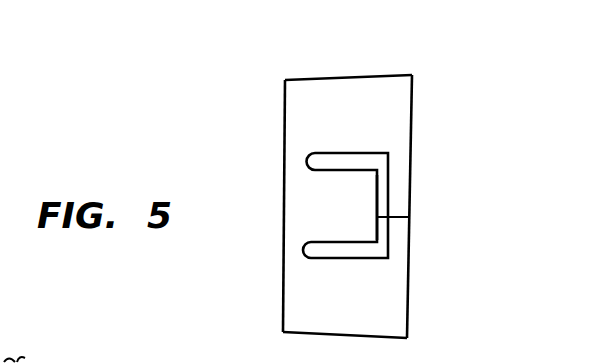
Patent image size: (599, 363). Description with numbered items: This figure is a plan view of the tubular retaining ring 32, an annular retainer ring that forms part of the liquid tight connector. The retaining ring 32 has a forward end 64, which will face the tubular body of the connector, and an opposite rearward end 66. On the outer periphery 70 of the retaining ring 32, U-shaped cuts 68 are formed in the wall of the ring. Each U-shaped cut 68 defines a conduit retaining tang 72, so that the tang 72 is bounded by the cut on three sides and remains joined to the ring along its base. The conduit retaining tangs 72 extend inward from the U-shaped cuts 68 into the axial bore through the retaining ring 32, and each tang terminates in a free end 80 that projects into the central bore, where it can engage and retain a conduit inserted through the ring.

The tubular retaining ring 32 is at (380, 60).
The forward end 64 is at (410, 200).
The rearward end 66 is at (284, 205).
The U-shaped cuts 68 is at (383, 162).
The outer periphery 70 is at (355, 120).
The conduit retaining tangs 72 is at (362, 212).
The free ends 80 is at (410, 217).